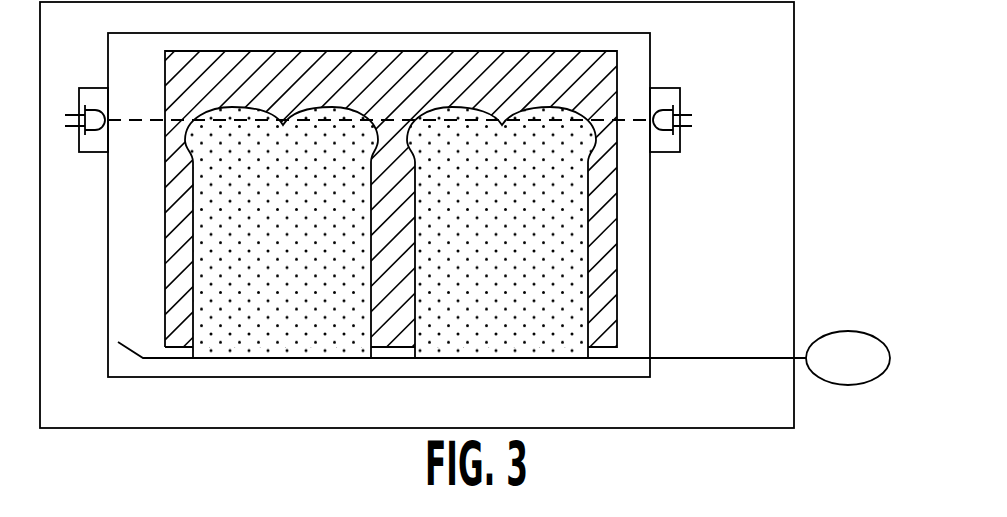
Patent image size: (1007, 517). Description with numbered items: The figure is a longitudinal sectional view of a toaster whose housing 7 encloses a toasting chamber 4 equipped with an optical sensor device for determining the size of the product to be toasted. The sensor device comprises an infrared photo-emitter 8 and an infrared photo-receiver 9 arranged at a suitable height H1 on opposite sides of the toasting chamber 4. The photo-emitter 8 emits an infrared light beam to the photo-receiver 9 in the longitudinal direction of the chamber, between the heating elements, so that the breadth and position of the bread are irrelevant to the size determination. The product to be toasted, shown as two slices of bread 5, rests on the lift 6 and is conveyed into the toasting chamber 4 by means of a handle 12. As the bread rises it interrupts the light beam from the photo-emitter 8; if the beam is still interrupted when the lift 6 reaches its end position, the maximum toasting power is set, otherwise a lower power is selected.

The toasting chamber 4 is at (650, 50).
The slice of bread 5 is at (298, 335).
The lift 6 is at (156, 358).
The housing 7 is at (794, 30).
The IR photo-emitter 8 is at (92, 88).
The IR photo-receiver 9 is at (666, 88).
The handle 12 is at (856, 332).
The heating element H1 is at (617, 267).